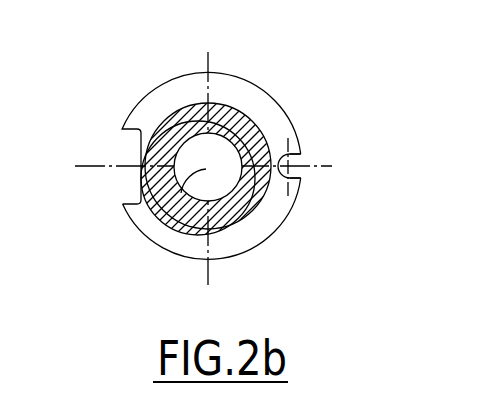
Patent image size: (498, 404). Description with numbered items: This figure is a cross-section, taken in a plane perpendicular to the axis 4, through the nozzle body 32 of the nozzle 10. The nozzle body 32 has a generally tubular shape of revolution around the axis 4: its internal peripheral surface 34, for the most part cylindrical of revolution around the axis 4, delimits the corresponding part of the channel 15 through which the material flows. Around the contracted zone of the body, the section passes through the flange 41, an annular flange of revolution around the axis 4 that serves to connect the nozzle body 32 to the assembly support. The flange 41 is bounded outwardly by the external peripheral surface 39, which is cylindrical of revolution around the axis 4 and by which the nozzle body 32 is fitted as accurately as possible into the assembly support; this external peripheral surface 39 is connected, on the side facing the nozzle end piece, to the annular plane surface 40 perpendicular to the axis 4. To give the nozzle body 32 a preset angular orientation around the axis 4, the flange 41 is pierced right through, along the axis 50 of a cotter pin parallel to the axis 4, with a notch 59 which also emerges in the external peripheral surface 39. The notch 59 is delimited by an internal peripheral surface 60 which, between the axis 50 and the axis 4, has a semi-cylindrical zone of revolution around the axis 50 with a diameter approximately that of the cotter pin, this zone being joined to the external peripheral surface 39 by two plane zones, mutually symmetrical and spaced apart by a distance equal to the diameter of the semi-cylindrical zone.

The axis 4 is at (159, 242).
The nozzle 10 is at (119, 222).
The channel 15 is at (191, 155).
The nozzle body 32 is at (191, 242).
The internal peripheral surface 34 is at (220, 142).
The external peripheral surface 39 is at (286, 109).
The annular plane surface 40 is at (253, 229).
The flange 41 is at (233, 105).
The axis 50 is at (302, 162).
The notch 59 is at (301, 177).
The internal peripheral surface 60 is at (299, 159).